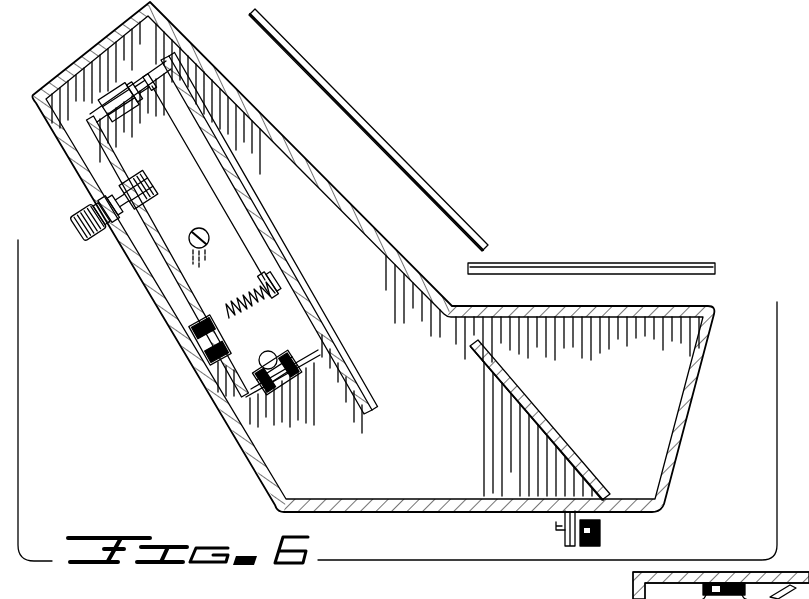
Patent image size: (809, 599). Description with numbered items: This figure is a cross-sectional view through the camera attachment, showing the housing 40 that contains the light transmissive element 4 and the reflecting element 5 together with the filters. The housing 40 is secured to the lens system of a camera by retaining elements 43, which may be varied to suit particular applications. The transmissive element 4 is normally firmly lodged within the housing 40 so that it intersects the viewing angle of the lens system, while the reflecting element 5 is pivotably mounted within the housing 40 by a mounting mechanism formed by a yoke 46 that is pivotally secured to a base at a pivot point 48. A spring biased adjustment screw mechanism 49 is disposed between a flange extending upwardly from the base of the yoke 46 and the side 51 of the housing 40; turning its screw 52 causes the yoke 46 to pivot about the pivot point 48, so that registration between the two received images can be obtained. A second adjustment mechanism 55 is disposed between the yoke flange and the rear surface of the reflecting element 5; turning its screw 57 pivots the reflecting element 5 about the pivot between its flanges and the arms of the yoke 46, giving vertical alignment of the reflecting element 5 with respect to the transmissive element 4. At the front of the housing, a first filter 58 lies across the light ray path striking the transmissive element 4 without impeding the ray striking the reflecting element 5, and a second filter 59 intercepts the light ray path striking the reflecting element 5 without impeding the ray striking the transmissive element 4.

The light transmissive element 4 is at (548, 423).
The reflecting element 5 is at (302, 286).
The housing 40 is at (686, 424).
The retaining elements 43 is at (567, 547).
The yoke 46 is at (208, 283).
The pivot point 48 is at (201, 226).
The spring biased adjustment screw mechanism 49 is at (134, 212).
The side of housing 51 is at (253, 457).
The screw 52 is at (89, 246).
The second adjustment mechanism 55 is at (238, 297).
The screw 57 is at (193, 364).
The first filter 58 is at (651, 248).
The second filter 59 is at (436, 190).